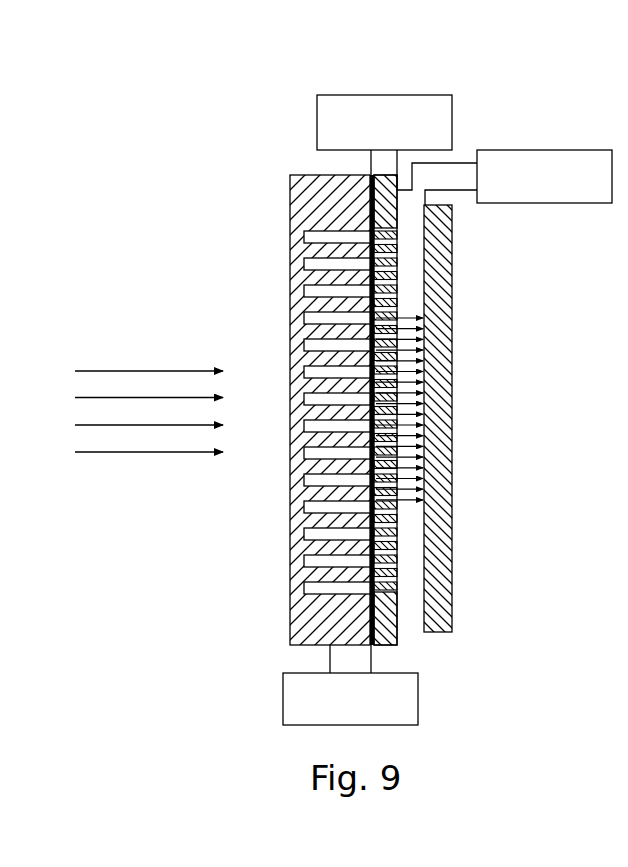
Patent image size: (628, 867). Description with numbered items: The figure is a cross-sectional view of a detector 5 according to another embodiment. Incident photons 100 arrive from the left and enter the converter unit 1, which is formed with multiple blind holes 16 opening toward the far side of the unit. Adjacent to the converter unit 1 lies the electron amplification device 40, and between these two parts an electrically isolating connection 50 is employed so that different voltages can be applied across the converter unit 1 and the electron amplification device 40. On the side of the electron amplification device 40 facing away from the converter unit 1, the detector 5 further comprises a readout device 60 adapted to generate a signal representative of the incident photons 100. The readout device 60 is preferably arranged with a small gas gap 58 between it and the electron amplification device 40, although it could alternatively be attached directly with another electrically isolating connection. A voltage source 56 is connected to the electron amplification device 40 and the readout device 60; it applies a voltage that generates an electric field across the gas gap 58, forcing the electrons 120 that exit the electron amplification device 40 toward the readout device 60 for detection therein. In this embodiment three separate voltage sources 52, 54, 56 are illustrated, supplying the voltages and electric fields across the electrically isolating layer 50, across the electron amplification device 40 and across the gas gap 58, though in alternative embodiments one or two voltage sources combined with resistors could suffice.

The detector 5 is at (237, 148).
The converter unit 1 is at (330, 175).
The blind holes 16 is at (307, 264).
The electrically isolating connection 50 is at (370, 615).
The electron amplification device 40 is at (398, 645).
The gas gap 58 is at (403, 258).
The electrons 120 is at (428, 345).
The readout device 60 is at (452, 592).
The voltage source 54 is at (383, 95).
The voltage source 56 is at (547, 150).
The voltage source 52 is at (418, 697).
The incident photons 100 is at (141, 370).